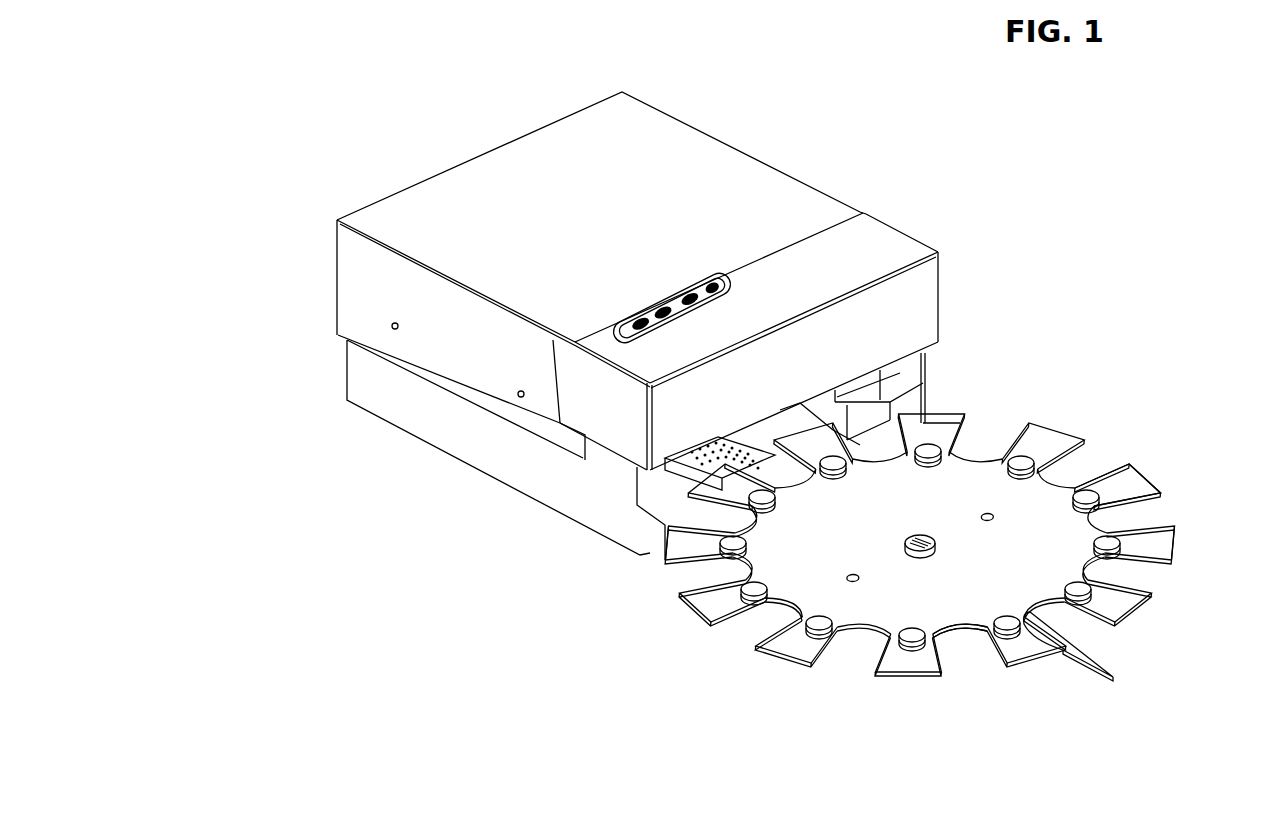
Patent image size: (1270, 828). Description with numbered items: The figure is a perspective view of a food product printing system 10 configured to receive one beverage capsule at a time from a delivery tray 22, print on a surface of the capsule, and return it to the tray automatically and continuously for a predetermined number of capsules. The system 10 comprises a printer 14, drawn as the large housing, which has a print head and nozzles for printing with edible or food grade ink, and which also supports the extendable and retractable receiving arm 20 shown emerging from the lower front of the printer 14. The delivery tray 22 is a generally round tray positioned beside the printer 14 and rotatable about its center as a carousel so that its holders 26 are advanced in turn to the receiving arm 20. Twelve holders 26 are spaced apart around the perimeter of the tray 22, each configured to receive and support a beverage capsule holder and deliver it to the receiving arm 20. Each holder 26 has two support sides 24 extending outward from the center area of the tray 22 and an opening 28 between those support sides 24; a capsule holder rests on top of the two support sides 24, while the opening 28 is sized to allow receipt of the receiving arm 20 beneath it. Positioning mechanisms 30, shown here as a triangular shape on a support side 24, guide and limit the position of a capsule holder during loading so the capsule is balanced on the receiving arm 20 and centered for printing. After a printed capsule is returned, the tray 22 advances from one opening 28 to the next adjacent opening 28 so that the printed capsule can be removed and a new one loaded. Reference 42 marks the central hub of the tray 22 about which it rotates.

The printing system 10 is at (288, 182).
The printer 14 is at (969, 267).
The receiving arm 20 is at (718, 472).
The delivery tray 22 is at (943, 553).
The support sides 24 is at (792, 642).
The holder 26 is at (1132, 444).
The opening 28 is at (968, 658).
The positioning mechanism 30 is at (1037, 613).
The central hub 42 is at (934, 513).